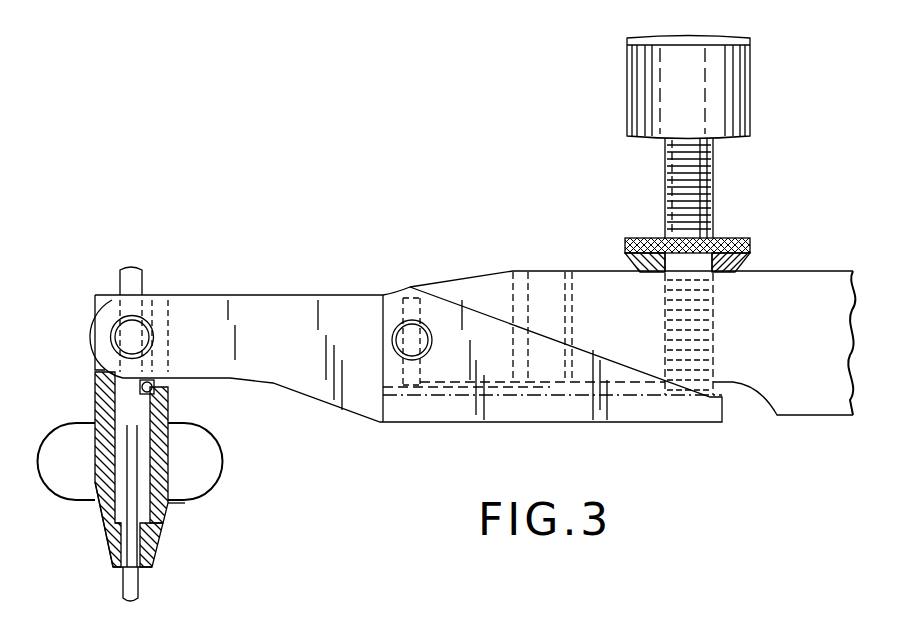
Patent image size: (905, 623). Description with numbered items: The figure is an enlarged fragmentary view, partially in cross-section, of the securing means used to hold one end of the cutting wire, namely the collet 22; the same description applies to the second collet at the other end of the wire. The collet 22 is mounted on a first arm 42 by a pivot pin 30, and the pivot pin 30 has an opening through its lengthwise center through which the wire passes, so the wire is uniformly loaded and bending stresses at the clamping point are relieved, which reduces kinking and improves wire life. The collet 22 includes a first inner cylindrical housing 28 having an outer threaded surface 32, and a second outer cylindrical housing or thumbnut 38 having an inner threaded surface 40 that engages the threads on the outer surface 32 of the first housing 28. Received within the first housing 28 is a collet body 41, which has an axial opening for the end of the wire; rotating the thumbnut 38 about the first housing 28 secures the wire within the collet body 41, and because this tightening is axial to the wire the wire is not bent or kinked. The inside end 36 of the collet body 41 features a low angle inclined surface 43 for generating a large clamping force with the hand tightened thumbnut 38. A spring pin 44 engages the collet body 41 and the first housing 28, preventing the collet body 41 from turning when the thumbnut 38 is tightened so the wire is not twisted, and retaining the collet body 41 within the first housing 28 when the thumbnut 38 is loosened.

The collet 22 is at (170, 470).
The first inner cylindrical housing 28 is at (155, 420).
The pivot pin 30 is at (135, 330).
The outer threaded surface 32 is at (162, 412).
The inside end 36 is at (105, 413).
The thumbnut 38 is at (108, 543).
The inner threaded surface 40 is at (100, 513).
The collet body 41 is at (115, 568).
The first arm 42 is at (282, 312).
The low angle inclined surface 43 is at (142, 547).
The spring pin 44 is at (152, 390).